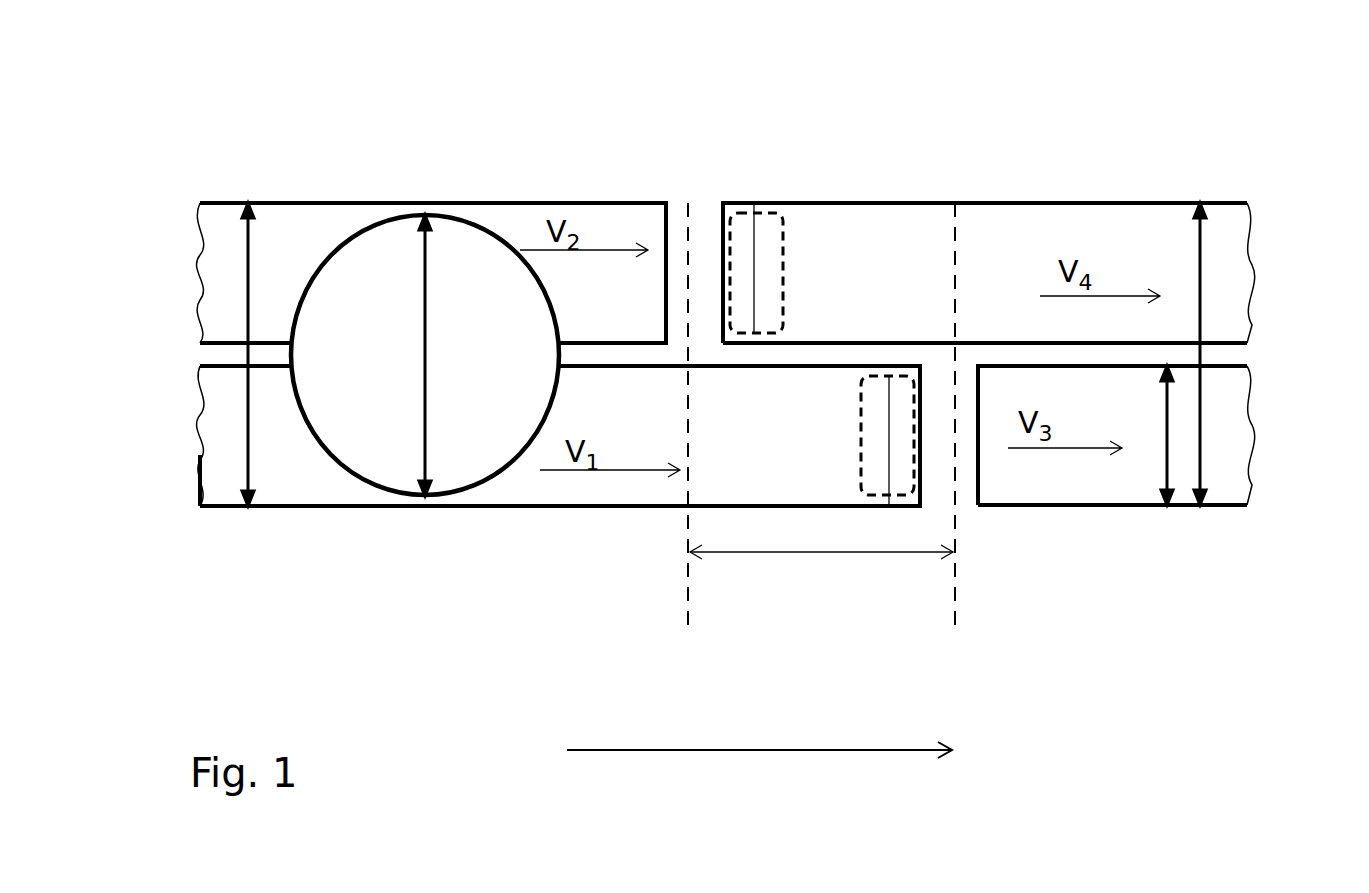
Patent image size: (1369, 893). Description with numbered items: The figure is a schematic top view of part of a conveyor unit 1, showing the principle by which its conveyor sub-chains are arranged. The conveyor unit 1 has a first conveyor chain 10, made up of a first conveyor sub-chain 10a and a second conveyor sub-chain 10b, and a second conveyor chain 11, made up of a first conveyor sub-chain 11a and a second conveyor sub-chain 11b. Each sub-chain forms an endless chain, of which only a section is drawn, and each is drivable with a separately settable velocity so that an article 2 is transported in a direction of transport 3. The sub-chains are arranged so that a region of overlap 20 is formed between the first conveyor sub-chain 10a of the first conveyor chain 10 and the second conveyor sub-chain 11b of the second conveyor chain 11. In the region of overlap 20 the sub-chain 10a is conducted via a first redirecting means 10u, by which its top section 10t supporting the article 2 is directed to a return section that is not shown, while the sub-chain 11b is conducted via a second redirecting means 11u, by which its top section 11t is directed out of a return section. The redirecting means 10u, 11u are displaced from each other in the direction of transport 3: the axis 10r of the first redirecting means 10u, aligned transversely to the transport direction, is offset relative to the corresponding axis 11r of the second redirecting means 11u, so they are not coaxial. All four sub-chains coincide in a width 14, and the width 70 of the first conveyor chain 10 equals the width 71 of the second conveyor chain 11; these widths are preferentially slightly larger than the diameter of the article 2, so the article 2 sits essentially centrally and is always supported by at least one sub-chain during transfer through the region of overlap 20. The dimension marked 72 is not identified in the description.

The conveyor unit 1 is at (480, 674).
The article 2 is at (499, 302).
The direction of transport 3 is at (790, 750).
The first conveyor chain 10 is at (516, 357).
The first conveyor sub-chain of the first conveyor chain 10a is at (513, 510).
The second conveyor sub-chain of the first conveyor chain 10b is at (480, 202).
The top section 10t is at (318, 477).
The first redirecting means 10u is at (860, 408).
The axis of the first redirecting means 10r is at (890, 393).
The second conveyor chain 11 is at (1034, 363).
The first conveyor sub-chain of the second conveyor chain 11a is at (1012, 510).
The second conveyor sub-chain of the second conveyor chain 11b is at (1105, 200).
The top section 11t is at (1026, 232).
The second redirecting means 11u is at (783, 246).
The axis of the second redirecting means 11r is at (755, 298).
The width 14 is at (1152, 445).
The region of overlap 20 is at (828, 553).
The width of the first conveyor chain 70 is at (255, 257).
The width of the second conveyor chain 71 is at (1205, 466).
The roll diameter 72 is at (418, 378).